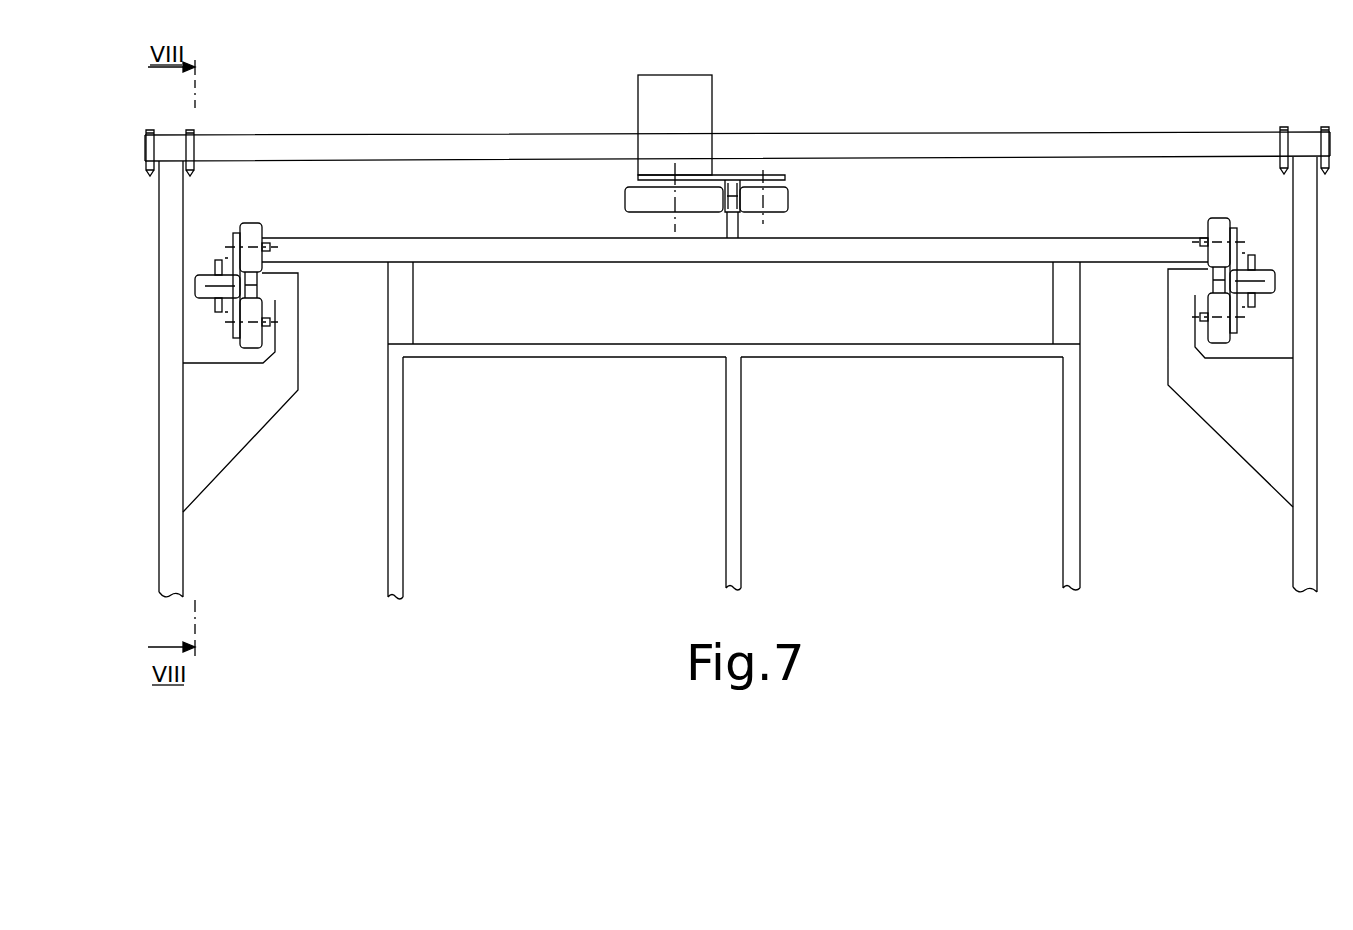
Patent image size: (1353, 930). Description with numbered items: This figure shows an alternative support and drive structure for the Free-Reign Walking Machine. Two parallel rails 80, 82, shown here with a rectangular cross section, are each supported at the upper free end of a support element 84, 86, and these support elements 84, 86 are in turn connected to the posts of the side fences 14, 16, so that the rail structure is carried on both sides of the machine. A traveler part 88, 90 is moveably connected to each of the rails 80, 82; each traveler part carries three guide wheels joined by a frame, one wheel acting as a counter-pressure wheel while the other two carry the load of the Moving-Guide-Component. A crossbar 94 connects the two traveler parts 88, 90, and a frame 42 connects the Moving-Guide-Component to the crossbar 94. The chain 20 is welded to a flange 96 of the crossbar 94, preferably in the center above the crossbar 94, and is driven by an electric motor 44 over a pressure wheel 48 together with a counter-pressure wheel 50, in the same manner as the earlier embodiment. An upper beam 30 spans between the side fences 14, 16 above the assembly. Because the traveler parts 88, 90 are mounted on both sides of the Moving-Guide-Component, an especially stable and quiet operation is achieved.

The side fence 14 is at (1310, 561).
The side fence 16 is at (176, 590).
The chain 20 is at (731, 190).
The upper cross beam 30 is at (1010, 150).
The frame 42 is at (738, 495).
The electric motor 44 is at (698, 102).
The pressure wheel 48 is at (638, 202).
The roller 50 is at (778, 200).
The rail 80 is at (1202, 300).
The rail 82 is at (258, 290).
The support element 84 is at (1240, 428).
The support element 86 is at (231, 435).
The traveler part 88 is at (1237, 236).
The traveler part 90 is at (233, 240).
The crossbar 94 is at (566, 253).
The flange 96 is at (731, 225).